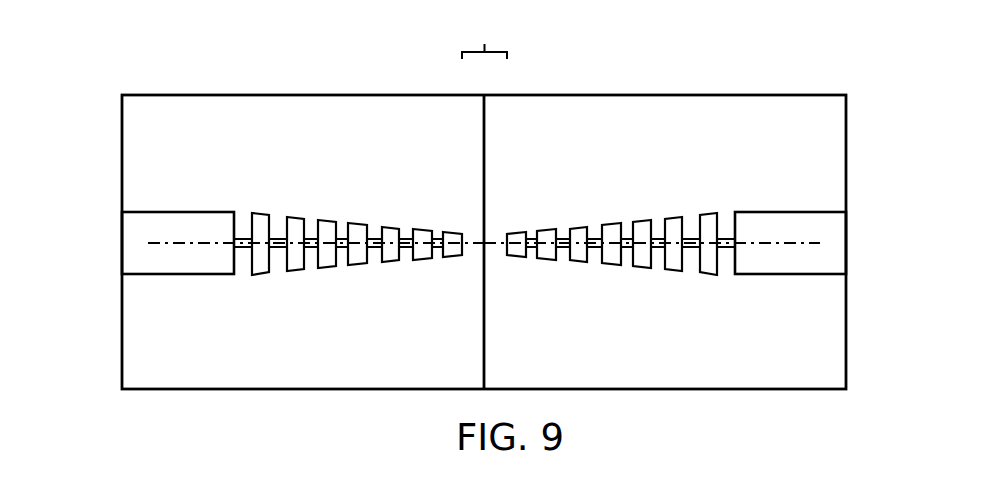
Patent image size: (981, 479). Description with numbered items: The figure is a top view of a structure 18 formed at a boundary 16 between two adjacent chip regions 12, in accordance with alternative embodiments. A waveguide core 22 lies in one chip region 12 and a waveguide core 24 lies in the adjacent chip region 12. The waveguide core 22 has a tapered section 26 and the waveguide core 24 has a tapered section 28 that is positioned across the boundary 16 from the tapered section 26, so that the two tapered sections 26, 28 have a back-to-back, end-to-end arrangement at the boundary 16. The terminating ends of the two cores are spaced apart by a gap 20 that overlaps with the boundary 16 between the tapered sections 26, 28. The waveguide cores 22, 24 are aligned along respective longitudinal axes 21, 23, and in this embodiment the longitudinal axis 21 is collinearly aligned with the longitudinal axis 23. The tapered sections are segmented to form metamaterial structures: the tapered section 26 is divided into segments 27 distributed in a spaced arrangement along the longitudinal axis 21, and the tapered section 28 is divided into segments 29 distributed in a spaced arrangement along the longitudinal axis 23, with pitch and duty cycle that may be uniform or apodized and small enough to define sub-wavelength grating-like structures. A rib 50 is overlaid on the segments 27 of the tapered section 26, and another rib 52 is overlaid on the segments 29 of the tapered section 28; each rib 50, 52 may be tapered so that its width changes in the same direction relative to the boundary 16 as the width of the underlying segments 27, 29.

The structure 18 is at (122, 79).
The chip region 12 is at (152, 144).
The boundary 16 is at (484, 357).
The gap 20 is at (484, 37).
The waveguide core 22 is at (157, 232).
The waveguide core 24 is at (807, 232).
The longitudinal axis 21 is at (217, 243).
The longitudinal axis 23 is at (787, 243).
The tapered section 26 is at (243, 150).
The tapered section 28 is at (507, 150).
The segments 27 is at (295, 252).
The segments 29 is at (645, 247).
The rib 50 is at (407, 242).
The rib 52 is at (565, 240).